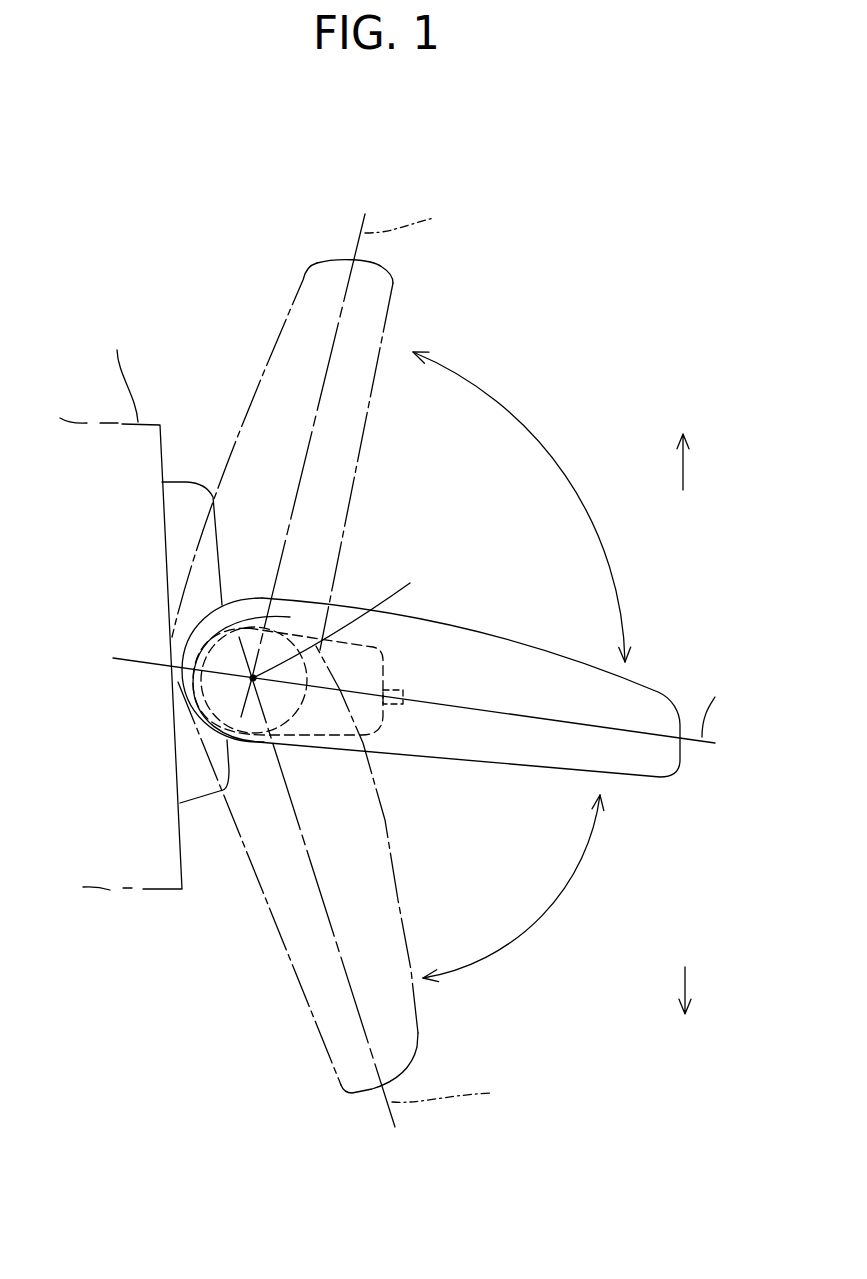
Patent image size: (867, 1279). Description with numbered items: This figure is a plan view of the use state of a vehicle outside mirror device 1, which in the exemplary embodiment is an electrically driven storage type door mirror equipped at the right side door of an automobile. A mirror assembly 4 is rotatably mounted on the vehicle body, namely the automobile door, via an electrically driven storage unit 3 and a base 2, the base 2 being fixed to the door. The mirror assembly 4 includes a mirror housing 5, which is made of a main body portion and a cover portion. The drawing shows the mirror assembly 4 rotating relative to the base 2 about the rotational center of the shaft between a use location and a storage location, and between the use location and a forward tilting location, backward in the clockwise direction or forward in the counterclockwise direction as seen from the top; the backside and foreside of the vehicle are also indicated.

The vehicle outside mirror device 1 is at (395, 664).
The base 2 is at (186, 480).
The electrically driven storage unit 3 is at (378, 733).
The mirror assembly 4 is at (648, 690).
The mirror housing 5 is at (510, 638).